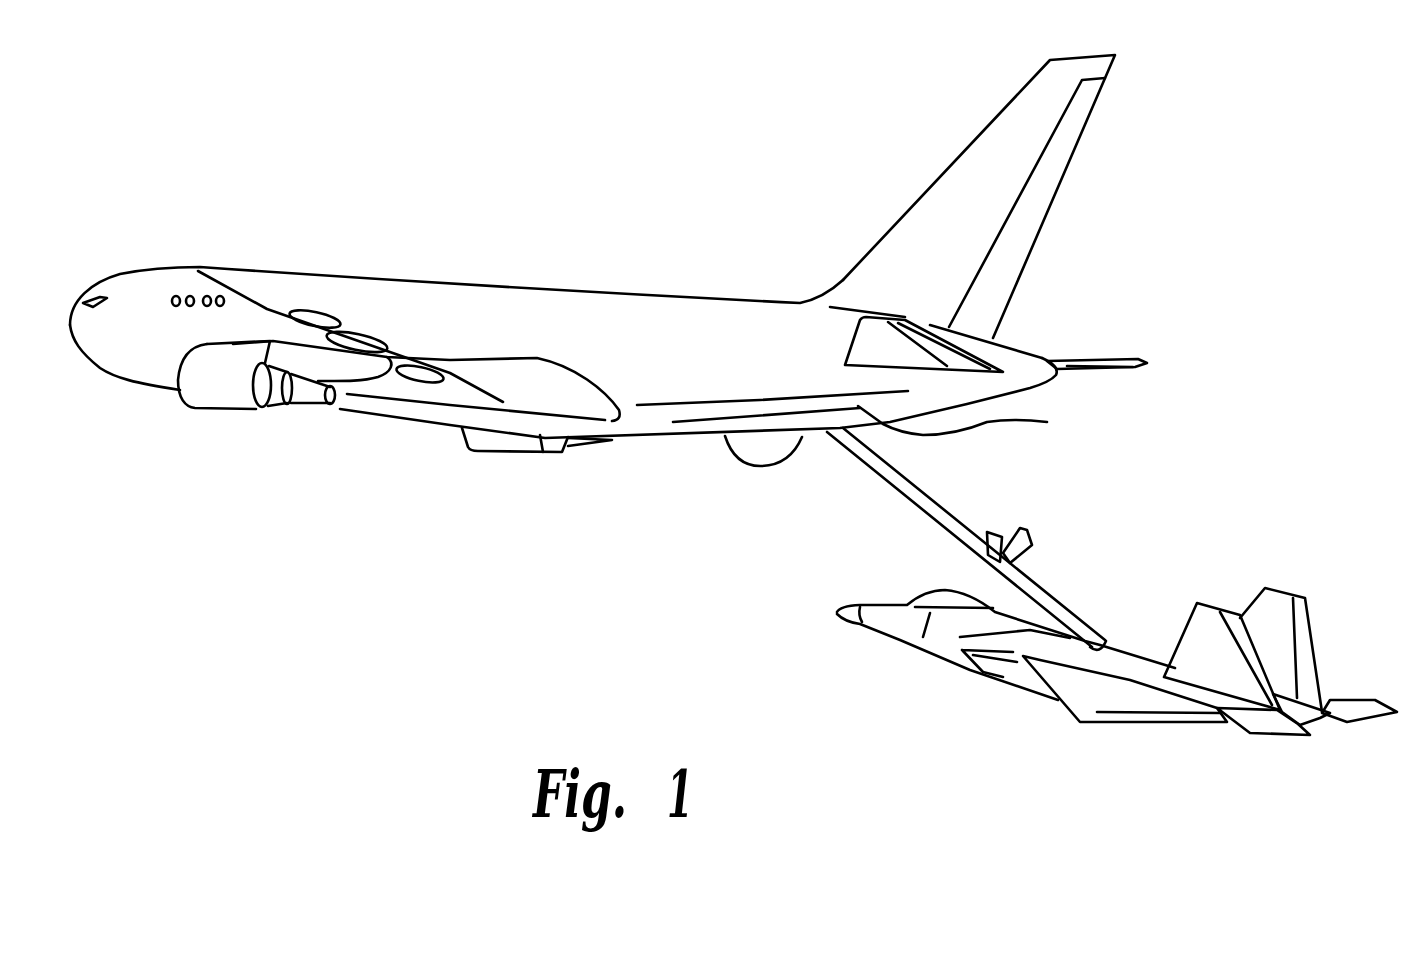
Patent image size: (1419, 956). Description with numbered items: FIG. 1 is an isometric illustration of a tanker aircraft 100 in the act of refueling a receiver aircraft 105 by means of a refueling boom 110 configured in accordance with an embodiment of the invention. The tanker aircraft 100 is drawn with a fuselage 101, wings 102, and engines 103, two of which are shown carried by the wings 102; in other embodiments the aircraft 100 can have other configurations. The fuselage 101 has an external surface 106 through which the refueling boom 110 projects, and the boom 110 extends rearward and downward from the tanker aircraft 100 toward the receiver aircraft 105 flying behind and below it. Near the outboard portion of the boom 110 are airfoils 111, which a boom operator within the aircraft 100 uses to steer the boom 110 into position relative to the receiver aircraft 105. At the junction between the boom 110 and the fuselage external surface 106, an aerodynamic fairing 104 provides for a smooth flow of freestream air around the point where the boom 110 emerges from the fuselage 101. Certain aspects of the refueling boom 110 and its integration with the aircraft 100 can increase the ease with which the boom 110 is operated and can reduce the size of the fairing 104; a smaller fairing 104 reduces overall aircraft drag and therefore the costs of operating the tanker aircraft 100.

The tanker aircraft 100 is at (270, 523).
The fuselage 101 is at (548, 307).
The wings 102 is at (270, 300).
The engines 103 is at (200, 373).
The aerodynamic fairing 104 is at (727, 443).
The receiver aircraft 105 is at (1024, 682).
The external surface 106 is at (1047, 422).
The refueling boom 110 is at (880, 510).
The airfoils 111 is at (1027, 538).